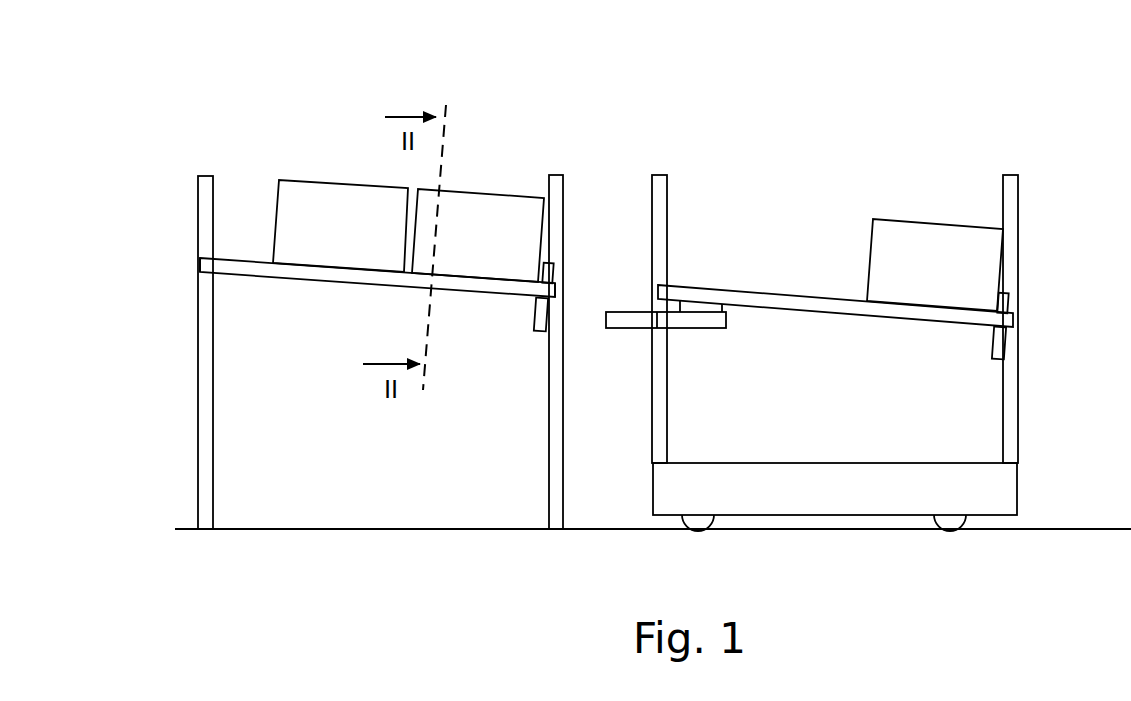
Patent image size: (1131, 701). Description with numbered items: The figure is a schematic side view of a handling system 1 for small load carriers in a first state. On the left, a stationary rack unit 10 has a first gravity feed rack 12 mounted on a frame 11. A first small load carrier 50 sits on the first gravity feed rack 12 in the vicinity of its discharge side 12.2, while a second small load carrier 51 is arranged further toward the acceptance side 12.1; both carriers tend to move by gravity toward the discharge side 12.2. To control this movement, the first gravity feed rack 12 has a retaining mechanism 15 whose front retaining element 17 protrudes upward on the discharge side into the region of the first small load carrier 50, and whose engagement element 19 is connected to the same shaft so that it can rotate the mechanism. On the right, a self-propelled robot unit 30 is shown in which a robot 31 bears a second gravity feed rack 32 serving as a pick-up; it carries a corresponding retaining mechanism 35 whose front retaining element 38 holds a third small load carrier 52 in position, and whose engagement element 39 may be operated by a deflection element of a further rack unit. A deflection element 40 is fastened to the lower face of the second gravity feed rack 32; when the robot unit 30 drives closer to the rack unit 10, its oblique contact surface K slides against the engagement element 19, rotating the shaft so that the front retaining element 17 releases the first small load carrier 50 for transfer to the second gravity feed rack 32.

The handling system 1 is at (766, 67).
The stationary rack unit 10 is at (242, 162).
The frame 11 is at (202, 313).
The first gravity feed rack 12 is at (362, 301).
The acceptance side 12.1 is at (185, 239).
The discharge side 12.2 is at (583, 242).
The retaining mechanism 15 is at (510, 253).
The front retaining element 17 is at (548, 262).
The engagement element 19 is at (535, 320).
The self-propelled robot unit 30 is at (1034, 162).
The robot 31 is at (848, 499).
The second gravity feed rack 32 is at (846, 344).
The retaining mechanism 35 is at (975, 289).
The front retaining element 38 is at (1005, 293).
The engagement element 39 is at (992, 342).
The deflection element 40 is at (693, 328).
The first small load carrier 50 is at (490, 251).
The second small load carrier 51 is at (355, 237).
The third small load carrier 52 is at (949, 281).
The contact surface K is at (626, 321).